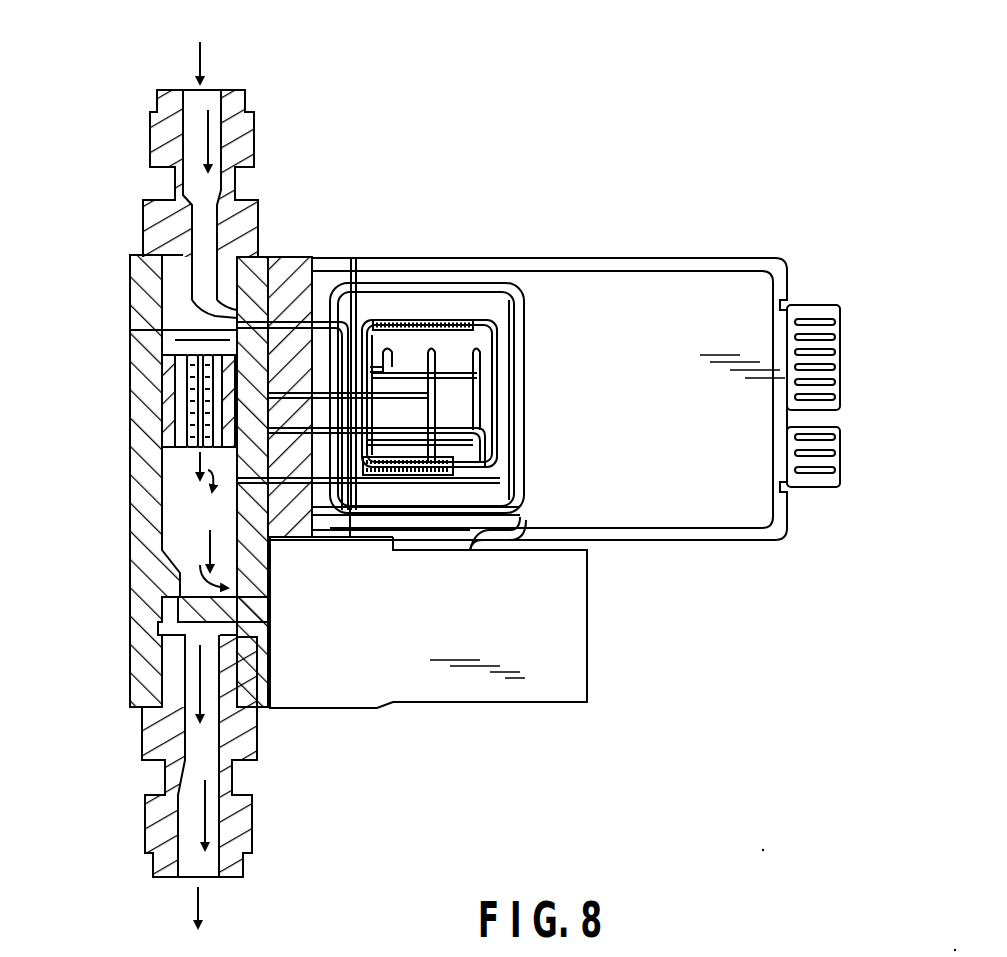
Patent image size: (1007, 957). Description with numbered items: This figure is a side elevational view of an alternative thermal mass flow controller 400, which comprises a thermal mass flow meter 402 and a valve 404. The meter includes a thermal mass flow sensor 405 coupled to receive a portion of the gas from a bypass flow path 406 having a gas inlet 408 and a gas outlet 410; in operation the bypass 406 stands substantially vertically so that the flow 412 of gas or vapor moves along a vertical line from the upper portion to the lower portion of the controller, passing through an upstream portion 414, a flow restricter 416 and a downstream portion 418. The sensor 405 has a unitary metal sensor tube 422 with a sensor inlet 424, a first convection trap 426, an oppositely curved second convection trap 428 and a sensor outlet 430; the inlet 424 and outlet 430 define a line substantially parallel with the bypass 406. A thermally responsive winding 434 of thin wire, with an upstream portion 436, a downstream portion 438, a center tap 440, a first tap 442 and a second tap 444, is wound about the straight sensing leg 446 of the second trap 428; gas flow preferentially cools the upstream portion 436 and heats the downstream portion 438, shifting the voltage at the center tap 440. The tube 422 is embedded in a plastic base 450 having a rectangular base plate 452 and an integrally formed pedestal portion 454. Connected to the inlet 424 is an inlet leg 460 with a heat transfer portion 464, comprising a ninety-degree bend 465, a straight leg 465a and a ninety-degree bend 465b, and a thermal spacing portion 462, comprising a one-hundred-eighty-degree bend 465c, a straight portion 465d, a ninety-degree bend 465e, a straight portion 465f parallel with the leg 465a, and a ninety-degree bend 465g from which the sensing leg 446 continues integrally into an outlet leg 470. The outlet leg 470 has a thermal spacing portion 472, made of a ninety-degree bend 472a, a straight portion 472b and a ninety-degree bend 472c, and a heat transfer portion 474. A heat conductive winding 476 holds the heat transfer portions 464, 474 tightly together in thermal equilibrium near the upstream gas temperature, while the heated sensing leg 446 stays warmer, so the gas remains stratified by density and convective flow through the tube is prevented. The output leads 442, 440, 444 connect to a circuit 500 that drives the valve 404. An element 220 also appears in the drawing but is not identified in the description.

The thermal mass flow controller 400 is at (743, 246).
The thermal mass flow meter 402 is at (440, 320).
The valve 404 is at (575, 672).
The thermal mass flow sensor 405 is at (548, 262).
The bypass flow path 406 is at (130, 283).
The gas inlet 408 is at (266, 257).
The gas outlet 410 is at (243, 840).
The flow 412 is at (200, 58).
The upstream portion 414 is at (240, 322).
The flow restricter 416 is at (165, 420).
The downstream portion 418 is at (178, 555).
The unitary metal sensor tube 422 is at (530, 382).
The sensor inlet 424 is at (175, 345).
The first convection trap 426 is at (520, 497).
The second convection trap 428 is at (520, 322).
The sensor outlet 430 is at (210, 505).
The thermally responsive heating sensing element 434 is at (548, 258).
The upstream portion 436 is at (398, 320).
The downstream portion 438 is at (515, 336).
The center tap 440 is at (418, 320).
The first tap 442 is at (355, 300).
The second tap 444 is at (522, 352).
The straight sensing leg 446 is at (470, 320).
The plastic base 450 is at (303, 260).
The rectangular base plate 452 is at (282, 540).
The pedestal portion 454 is at (350, 507).
The inlet leg 460 is at (338, 300).
The thermal spacing portion 462 is at (237, 447).
The heat transfer portion 464 is at (440, 552).
The ninety-degree bend 465 is at (343, 300).
The straight leg 465a is at (262, 330).
The ninety-degree bend 465b is at (365, 550).
The one-hundred-eighty-degree bend 465c is at (540, 505).
The straight portion 465d is at (530, 440).
The ninety-degree bend 465e is at (375, 443).
The straight portion 465f is at (505, 374).
The ninety-degree bend 465g is at (318, 300).
The outlet leg 470 is at (525, 455).
The thermal spacing portion 472 is at (525, 435).
The ninety-degree bend 472a is at (548, 282).
The straight portion 472b is at (535, 395).
The ninety-degree bend 472c is at (530, 470).
The outlet leg heat transfer portion 474 is at (445, 552).
The heat conductive winding 476 is at (405, 552).
The circuit 500 is at (830, 305).
The base plate 220 is at (500, 553).